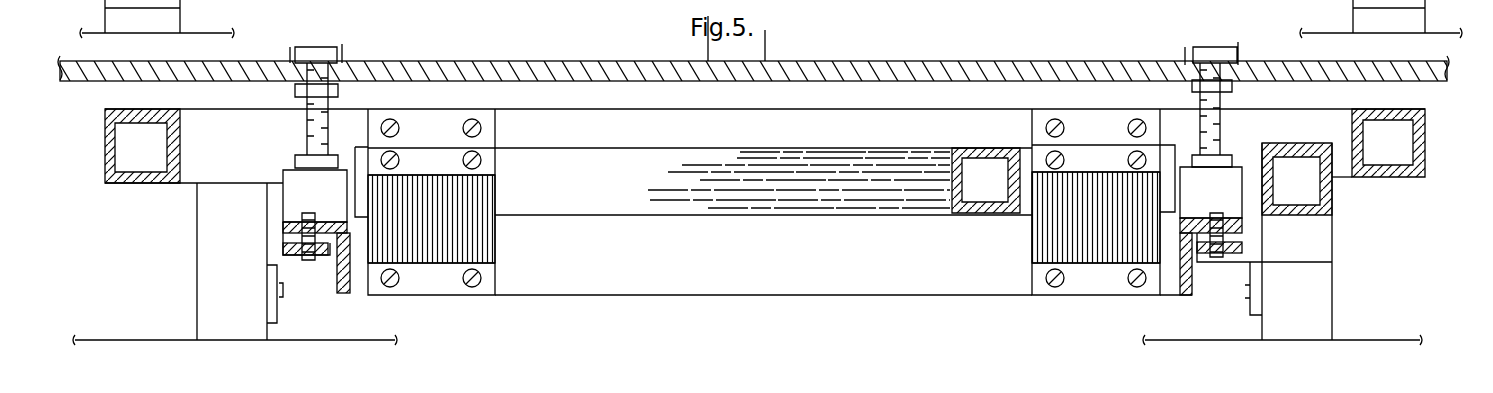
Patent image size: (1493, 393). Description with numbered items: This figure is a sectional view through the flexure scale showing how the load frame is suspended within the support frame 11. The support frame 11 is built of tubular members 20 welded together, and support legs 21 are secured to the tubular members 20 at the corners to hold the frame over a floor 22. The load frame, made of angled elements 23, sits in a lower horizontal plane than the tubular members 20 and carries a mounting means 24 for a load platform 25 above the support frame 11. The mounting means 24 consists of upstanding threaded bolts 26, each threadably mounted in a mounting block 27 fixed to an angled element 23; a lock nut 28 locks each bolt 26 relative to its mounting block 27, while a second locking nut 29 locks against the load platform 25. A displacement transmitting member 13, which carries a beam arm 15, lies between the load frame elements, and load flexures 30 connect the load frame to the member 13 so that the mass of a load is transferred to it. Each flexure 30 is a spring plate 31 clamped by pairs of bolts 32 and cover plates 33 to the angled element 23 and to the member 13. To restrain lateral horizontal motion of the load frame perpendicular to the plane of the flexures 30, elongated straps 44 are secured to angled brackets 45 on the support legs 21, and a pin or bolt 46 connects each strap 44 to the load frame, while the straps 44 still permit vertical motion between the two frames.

The support frame 11 is at (1425, 157).
The displacement transmitting member 13 is at (737, 202).
The beam arm 15 is at (952, 192).
The tubular member 20 is at (105, 159).
The support leg 21 is at (213, 230).
The floor 22 is at (128, 338).
The angled element 23 is at (771, 19).
The mounting means 24 is at (244, 148).
The load platform 25 is at (651, 80).
The threaded bolt 26 is at (307, 127).
The mounting block 27 is at (1225, 198).
The lock nut 28 is at (295, 161).
The second locking nut 29 is at (295, 90).
The load flexure 30 is at (478, 243).
The spring plate 31 is at (500, 203).
The bolt 32 is at (469, 166).
The cover plate 33 is at (490, 163).
The elongated strap 44 is at (290, 253).
The angled bracket 45 is at (272, 295).
The pin or bolt 46 is at (317, 218).